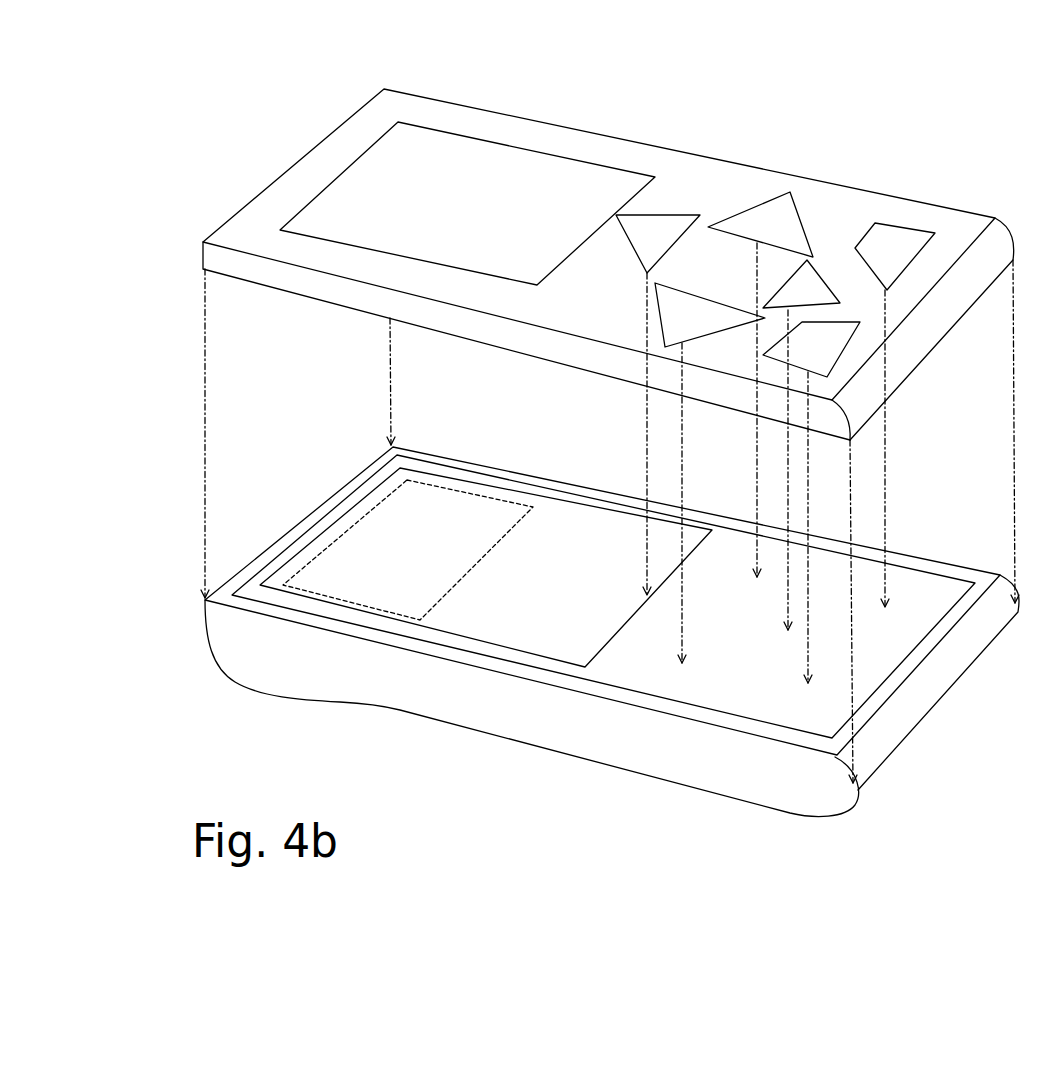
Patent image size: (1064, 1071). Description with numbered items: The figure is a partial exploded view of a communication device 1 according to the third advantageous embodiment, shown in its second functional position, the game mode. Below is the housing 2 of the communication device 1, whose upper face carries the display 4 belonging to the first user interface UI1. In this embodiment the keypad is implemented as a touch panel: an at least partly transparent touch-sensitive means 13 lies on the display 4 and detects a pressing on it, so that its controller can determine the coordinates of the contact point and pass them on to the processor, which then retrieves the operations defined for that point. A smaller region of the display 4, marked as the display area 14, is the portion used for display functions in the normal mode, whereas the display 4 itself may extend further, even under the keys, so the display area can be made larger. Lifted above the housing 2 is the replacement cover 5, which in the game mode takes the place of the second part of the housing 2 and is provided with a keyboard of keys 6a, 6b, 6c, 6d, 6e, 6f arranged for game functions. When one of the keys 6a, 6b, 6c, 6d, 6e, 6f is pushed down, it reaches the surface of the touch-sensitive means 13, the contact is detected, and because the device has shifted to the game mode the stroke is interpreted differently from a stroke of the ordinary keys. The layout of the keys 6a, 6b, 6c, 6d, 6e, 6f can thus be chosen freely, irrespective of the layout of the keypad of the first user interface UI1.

The communication device 1 is at (630, 469).
The housing 2 is at (808, 458).
The display 4 is at (442, 629).
The replacement cover 5 is at (688, 152).
The key 6a is at (657, 330).
The key 6b is at (758, 207).
The key 6c is at (630, 253).
The key 6d is at (780, 288).
The key 6e is at (837, 353).
The key 6f is at (898, 233).
The touch-sensitive means 13 is at (500, 660).
The display area used in normal mode 14 is at (343, 537).
The first user interface UI1 is at (398, 122).